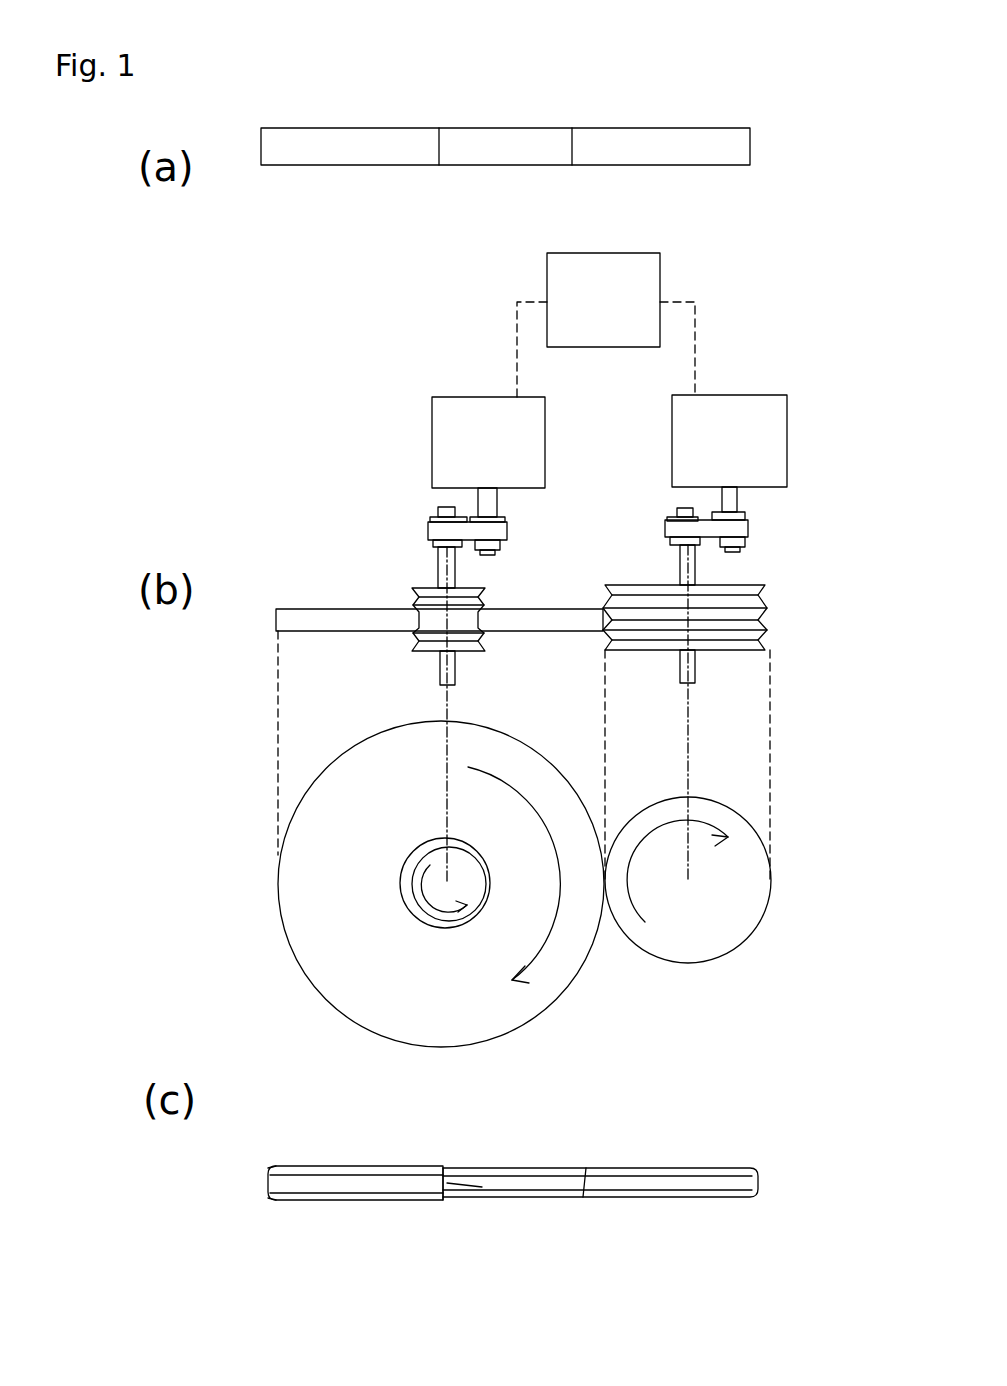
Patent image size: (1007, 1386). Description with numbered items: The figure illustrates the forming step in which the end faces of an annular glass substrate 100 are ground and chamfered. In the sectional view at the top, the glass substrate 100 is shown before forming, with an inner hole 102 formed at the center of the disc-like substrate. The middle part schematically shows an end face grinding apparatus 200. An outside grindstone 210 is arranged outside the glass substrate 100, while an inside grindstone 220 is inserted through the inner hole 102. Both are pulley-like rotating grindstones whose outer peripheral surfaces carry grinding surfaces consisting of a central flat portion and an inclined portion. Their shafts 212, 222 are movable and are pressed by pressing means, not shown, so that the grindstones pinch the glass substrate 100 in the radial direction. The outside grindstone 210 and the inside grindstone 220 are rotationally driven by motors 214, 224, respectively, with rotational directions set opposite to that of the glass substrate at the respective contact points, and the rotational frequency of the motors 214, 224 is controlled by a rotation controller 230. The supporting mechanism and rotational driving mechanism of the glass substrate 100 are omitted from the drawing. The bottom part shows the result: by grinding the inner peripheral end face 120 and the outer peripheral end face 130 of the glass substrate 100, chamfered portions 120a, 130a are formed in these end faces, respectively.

The glass substrate 100 is at (323, 127).
The inner hole 102 is at (507, 145).
The end face grinding apparatus 200 is at (413, 387).
The outside grindstone 210 is at (608, 585).
The shaft 212 is at (675, 508).
The motor 214 is at (745, 400).
The inside grindstone 220 is at (413, 592).
The shaft 222 is at (450, 505).
The motor 224 is at (440, 428).
The rotation controller 230 is at (663, 283).
The inner peripheral end face 120 is at (482, 1187).
The chamfered portion 120a is at (442, 1170).
The outer peripheral end face 130 is at (267, 1185).
The chamfered portion 130a is at (273, 1167).